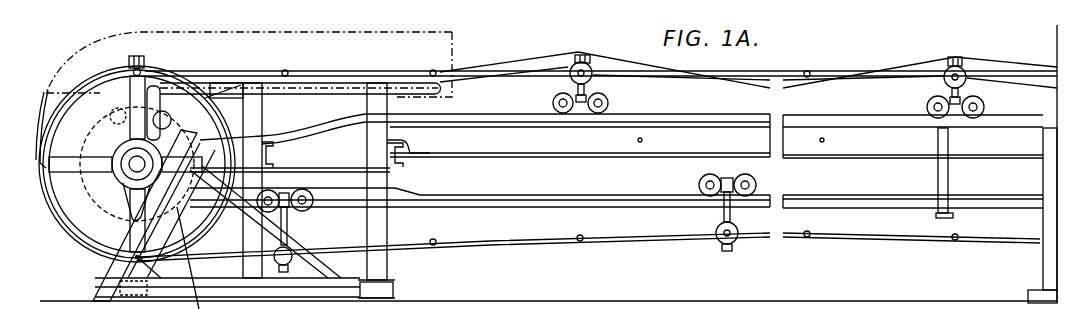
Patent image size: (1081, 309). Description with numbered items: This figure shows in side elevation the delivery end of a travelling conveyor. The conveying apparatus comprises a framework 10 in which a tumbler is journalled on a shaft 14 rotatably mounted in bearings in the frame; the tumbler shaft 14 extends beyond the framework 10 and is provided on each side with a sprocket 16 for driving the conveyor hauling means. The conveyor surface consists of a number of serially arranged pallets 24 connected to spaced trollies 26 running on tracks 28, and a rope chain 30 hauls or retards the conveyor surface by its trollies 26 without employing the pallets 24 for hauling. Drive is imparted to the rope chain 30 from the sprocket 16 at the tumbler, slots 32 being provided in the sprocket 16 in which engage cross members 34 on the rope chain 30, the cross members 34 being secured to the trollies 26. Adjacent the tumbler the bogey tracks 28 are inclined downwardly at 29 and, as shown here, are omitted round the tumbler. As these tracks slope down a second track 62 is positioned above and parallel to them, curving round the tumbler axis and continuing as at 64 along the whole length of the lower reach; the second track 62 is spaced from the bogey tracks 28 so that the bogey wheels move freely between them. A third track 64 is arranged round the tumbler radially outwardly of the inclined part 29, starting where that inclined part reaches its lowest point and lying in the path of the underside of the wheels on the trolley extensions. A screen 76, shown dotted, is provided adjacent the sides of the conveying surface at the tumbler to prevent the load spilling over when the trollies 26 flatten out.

The framework 10 is at (373, 265).
The tumbler shaft 14 is at (133, 167).
The sprocket 16 is at (82, 237).
The pallet 24 is at (624, 57).
The trolley 26 is at (591, 89).
The track 28 is at (662, 115).
The inclined part of track 29 is at (293, 129).
The rope chain 30 is at (923, 78).
The slot 32 is at (41, 160).
The cross member 34 is at (580, 238).
The second track 62 is at (316, 88).
The third track 64 is at (113, 100).
The screen 76 is at (454, 47).